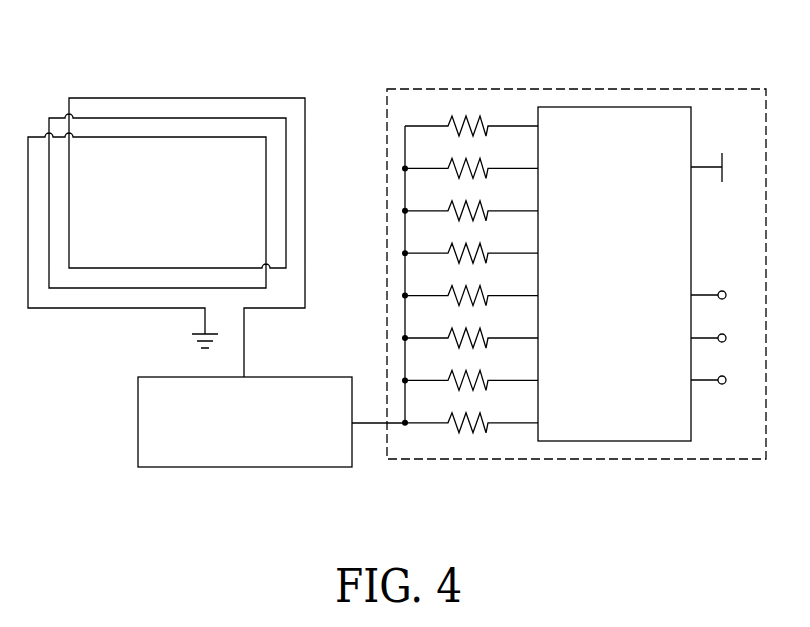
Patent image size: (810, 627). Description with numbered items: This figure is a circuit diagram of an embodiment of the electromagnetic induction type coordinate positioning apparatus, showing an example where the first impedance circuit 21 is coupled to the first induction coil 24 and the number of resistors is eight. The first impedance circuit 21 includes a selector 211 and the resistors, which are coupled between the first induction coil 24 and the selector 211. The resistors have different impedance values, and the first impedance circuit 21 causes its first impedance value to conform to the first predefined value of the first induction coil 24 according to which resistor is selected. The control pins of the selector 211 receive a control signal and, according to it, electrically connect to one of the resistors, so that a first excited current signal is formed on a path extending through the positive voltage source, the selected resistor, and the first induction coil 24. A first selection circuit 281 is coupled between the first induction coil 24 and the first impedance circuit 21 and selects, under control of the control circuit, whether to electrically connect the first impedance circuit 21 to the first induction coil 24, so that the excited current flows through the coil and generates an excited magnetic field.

The first induction coil 24 is at (93, 97).
The first impedance circuit 21 is at (576, 270).
The selector 211 is at (615, 442).
The first selection circuit 281 is at (138, 418).